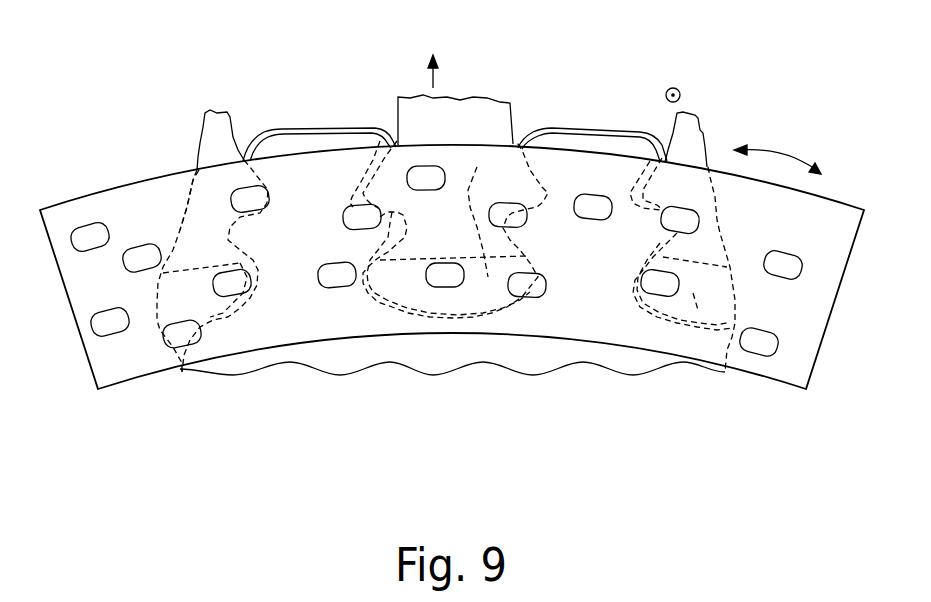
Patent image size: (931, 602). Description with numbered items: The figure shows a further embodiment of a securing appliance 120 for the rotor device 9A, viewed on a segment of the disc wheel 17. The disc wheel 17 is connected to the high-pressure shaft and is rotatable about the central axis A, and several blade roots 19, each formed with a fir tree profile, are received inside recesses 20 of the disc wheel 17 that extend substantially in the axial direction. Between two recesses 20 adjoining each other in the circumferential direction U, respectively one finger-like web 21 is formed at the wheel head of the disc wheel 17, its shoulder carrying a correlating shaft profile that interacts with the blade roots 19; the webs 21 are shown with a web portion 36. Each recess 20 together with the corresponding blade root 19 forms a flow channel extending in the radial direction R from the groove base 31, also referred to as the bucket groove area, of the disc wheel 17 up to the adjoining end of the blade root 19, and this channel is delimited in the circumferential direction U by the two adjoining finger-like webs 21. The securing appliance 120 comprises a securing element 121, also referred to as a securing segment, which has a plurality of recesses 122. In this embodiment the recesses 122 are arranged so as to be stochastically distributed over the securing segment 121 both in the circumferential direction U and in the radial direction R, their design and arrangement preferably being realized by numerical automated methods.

The rotor device 9A is at (80, 164).
The securing element 121 is at (118, 208).
The securing appliance 120 is at (182, 166).
The recesses 122 is at (335, 287).
The blade root 19 is at (221, 128).
The recesses 20 is at (477, 167).
The finger-like web 21 is at (297, 142).
The bridge web 36 is at (337, 132).
The disc wheel 17 is at (260, 377).
The groove base 31 is at (472, 317).
The radial direction R is at (437, 78).
The axis A is at (680, 91).
The circumferential direction U is at (783, 150).